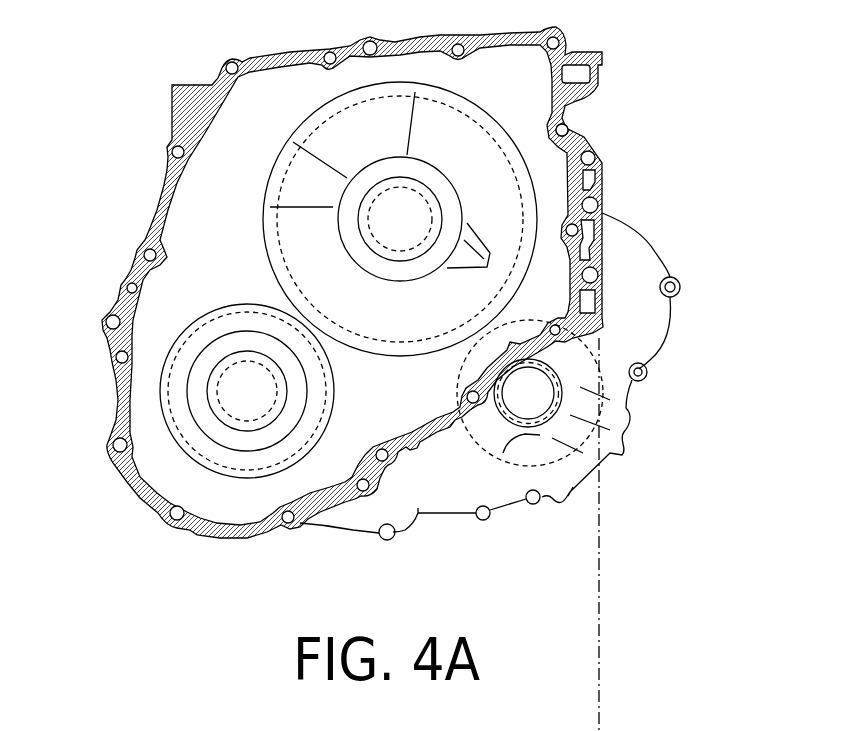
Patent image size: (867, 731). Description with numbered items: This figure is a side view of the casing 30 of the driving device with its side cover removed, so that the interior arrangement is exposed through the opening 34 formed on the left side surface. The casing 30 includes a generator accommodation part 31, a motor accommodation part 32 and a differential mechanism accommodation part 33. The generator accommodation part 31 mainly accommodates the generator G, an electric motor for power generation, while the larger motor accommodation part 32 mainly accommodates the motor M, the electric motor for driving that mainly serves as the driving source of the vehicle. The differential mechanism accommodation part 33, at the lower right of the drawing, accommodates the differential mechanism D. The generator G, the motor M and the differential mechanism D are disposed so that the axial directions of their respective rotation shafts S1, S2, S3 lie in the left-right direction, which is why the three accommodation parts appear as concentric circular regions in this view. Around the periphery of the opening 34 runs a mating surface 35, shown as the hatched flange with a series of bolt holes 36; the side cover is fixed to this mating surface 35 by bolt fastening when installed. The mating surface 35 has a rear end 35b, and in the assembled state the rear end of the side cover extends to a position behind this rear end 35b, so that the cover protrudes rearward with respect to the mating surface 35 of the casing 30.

The casing 30 is at (172, 103).
The generator accommodation part 31 is at (235, 389).
The motor accommodation part 32 is at (390, 217).
The differential mechanism accommodation part 33 is at (545, 400).
The opening 34 is at (534, 68).
The mating surface 35 is at (585, 138).
The rear end of the mating surface 35b is at (603, 173).
The bolt holes 36 is at (590, 275).
The motor M is at (328, 118).
The generator G is at (187, 338).
The differential mechanism D is at (522, 468).
The rotation shaft S1 is at (247, 420).
The rotation shaft S2 is at (413, 192).
The rotation shaft S3 is at (553, 386).